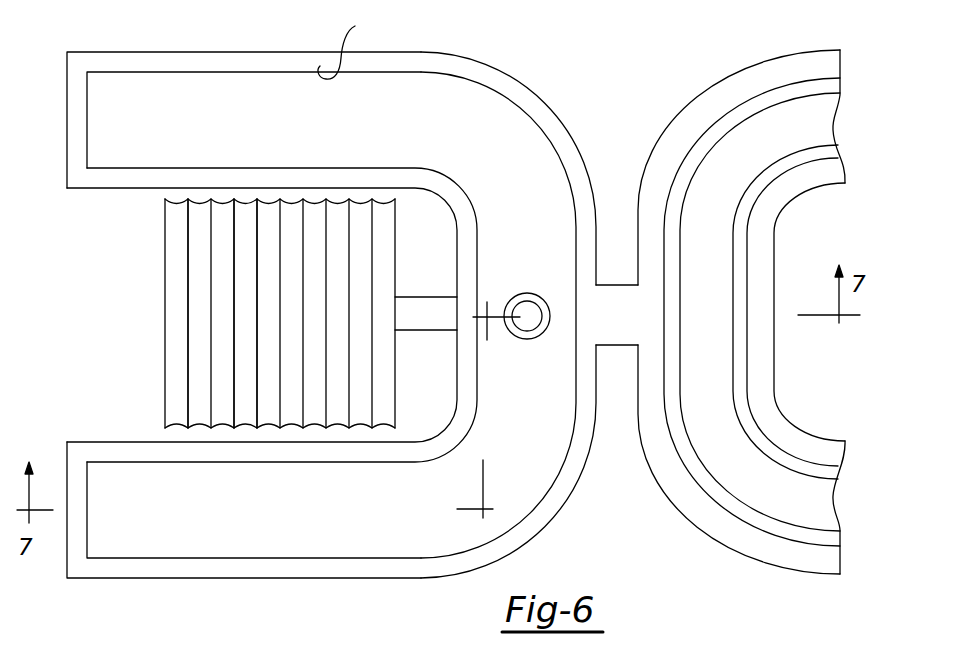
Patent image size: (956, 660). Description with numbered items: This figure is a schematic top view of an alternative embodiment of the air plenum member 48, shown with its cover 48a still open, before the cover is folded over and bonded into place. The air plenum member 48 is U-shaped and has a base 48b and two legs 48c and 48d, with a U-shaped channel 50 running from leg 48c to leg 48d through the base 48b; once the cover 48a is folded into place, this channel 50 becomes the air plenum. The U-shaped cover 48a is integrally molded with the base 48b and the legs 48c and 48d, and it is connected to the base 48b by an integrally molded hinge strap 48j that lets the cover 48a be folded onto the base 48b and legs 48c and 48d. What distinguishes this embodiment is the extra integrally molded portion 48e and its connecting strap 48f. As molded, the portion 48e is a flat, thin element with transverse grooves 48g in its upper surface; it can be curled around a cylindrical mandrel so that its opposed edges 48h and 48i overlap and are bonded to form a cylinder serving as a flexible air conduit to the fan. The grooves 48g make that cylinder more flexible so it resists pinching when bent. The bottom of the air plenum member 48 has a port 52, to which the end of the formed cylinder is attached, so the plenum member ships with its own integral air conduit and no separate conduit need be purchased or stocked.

The air plenum member 48 is at (557, 107).
The cover 48a is at (743, 83).
The base 48b is at (598, 231).
The leg 48c is at (218, 51).
The leg 48d is at (107, 442).
The integral portion 48e is at (249, 316).
The connecting strap 48f is at (428, 306).
The transverse grooves 48g is at (257, 215).
The edge 48h is at (294, 200).
The edge 48i is at (268, 428).
The hinge strap 48j is at (617, 337).
The U-shaped channel 50 is at (352, 44).
The port 52 is at (527, 310).